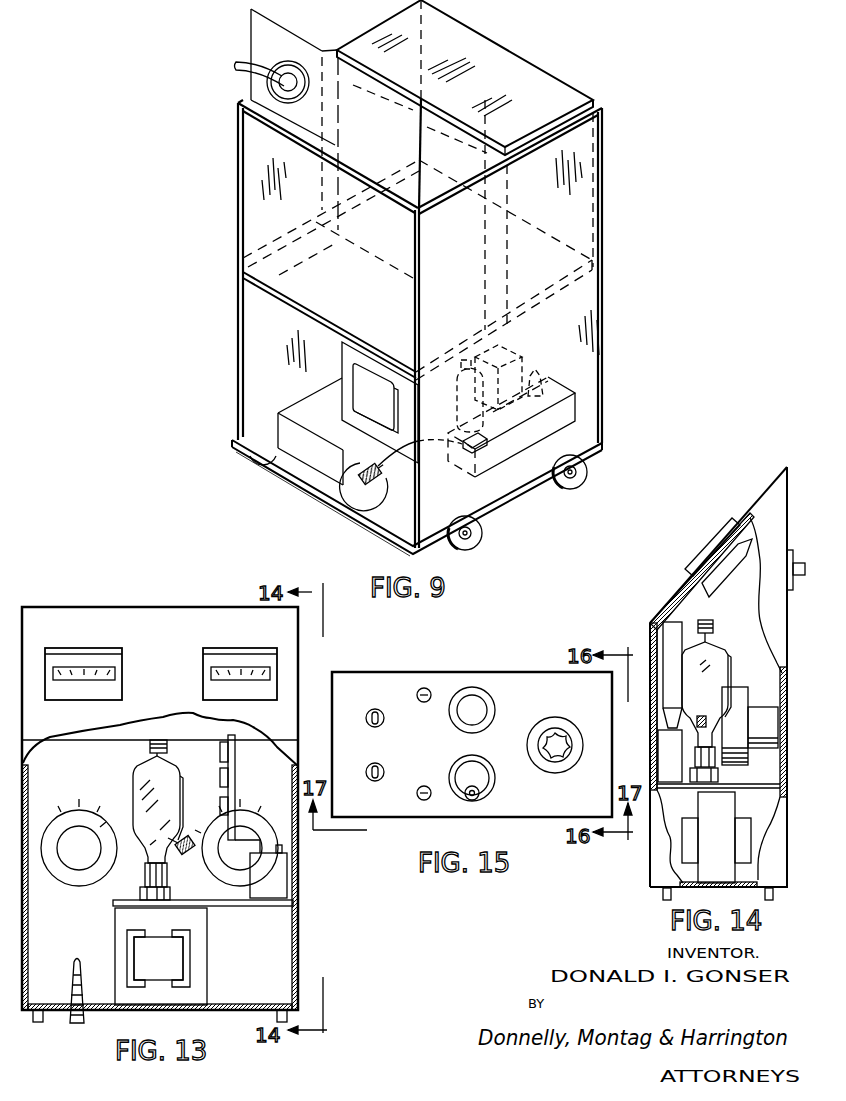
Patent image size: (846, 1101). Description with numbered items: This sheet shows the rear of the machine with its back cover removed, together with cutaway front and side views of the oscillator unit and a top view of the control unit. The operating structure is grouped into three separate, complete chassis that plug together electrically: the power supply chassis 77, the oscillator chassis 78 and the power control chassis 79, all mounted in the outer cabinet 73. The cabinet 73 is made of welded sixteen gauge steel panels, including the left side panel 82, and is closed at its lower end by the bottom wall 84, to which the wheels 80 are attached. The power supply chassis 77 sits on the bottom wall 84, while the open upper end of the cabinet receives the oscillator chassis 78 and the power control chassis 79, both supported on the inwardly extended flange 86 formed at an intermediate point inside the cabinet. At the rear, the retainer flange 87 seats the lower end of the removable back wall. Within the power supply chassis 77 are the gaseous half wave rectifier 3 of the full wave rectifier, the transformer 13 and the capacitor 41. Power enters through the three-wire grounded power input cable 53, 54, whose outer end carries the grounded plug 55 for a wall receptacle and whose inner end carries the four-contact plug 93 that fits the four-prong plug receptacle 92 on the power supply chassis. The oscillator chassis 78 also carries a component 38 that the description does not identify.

In FIG. 9, the gaseous half wave rectifier 3 is at (460, 395).
In FIG. 9, the transformer 13 is at (341, 353).
In FIG. 9, the handle knob 38 is at (243, 66).
In FIG. 9, the capacitor 41 is at (519, 343).
In FIG. 9, the power input cable 53 is at (375, 480).
In FIG. 9, the power input cable 54 is at (396, 486).
In FIG. 9, the three-wire grounded type plug 55 is at (338, 503).
In FIG. 9, the outer cabinet 73 is at (603, 202).
In FIG. 9, the power supply chassis 77 is at (320, 459).
In FIG. 9, the oscillator chassis 78 is at (250, 33).
In FIG. 13, the oscillator chassis 78 is at (300, 940).
In FIG. 14, the oscillator chassis 78 is at (663, 602).
In FIG. 9, the power control chassis 79 is at (527, 75).
In FIG. 15, the power control chassis 79 is at (462, 668).
In FIG. 9, the wheels 80 is at (583, 477).
In FIG. 9, the left side panel 82 is at (590, 310).
In FIG. 9, the bottom wall 84 is at (258, 447).
In FIG. 9, the inwardly extended flange 86 is at (310, 295).
In FIG. 9, the retainer flange 87 is at (353, 515).
In FIG. 9, the four-prong plug receptacle 92 is at (500, 452).
In FIG. 9, the four-contact plug 93 is at (470, 452).